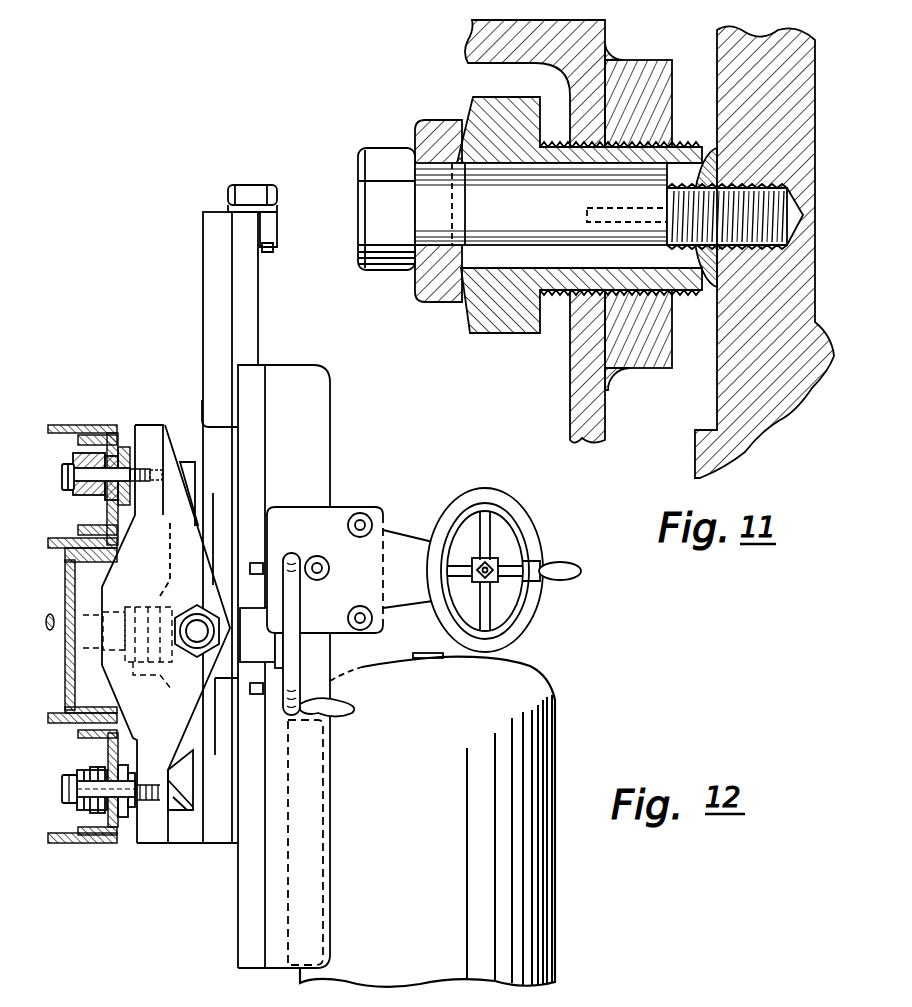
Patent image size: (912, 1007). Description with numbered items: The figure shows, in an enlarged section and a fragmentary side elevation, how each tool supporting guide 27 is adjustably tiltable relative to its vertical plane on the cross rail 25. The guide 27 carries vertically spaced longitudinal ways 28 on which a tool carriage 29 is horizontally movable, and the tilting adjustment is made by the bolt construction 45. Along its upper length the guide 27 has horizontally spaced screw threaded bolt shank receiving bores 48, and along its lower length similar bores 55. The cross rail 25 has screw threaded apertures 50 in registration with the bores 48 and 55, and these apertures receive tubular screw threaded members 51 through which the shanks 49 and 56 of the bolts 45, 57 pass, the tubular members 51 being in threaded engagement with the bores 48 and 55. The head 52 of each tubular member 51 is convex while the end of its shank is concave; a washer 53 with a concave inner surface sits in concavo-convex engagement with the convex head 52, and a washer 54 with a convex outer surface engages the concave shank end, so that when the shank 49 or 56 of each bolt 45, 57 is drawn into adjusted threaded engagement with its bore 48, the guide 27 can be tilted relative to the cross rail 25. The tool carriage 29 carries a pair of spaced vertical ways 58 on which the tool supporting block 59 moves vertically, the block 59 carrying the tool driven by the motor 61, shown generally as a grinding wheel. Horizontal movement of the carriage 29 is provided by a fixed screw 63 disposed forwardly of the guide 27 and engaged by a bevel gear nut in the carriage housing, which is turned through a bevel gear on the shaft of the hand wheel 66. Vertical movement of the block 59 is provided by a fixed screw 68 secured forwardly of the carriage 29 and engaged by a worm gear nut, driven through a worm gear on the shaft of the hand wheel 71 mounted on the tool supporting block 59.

In FIG. 11, the cross rail 25 is at (578, 388).
In FIG. 12, the cross rail 25 is at (69, 560).
In FIG. 11, the guide 27 is at (756, 417).
In FIG. 12, the guide 27 is at (124, 585).
In FIG. 12, the longitudinal ways 28 is at (178, 482).
In FIG. 12, the tool carriage 29 is at (218, 310).
In FIG. 11, the bolt construction 45 is at (373, 221).
In FIG. 12, the bolt construction 45 is at (67, 486).
In FIG. 11, the screw threaded bolt shank receiving bore 48 is at (748, 192).
In FIG. 12, the screw threaded bolt shank receiving bore 48 is at (146, 483).
In FIG. 11, the shank 49 is at (509, 221).
In FIG. 11, the screw threaded aperture 50 is at (638, 299).
In FIG. 11, the tubular screw threaded member 51 is at (586, 264).
In FIG. 11, the head 52 is at (495, 318).
In FIG. 12, the head 52 is at (98, 498).
In FIG. 11, the washer 53 is at (432, 130).
In FIG. 12, the washer 53 is at (84, 464).
In FIG. 11, the washer 54 is at (710, 152).
In FIG. 12, the washer 54 is at (134, 469).
In FIG. 12, the bore 55 is at (148, 800).
In FIG. 12, the shank 56 is at (143, 789).
In FIG. 12, the bolt 57 is at (66, 792).
In FIG. 12, the vertical ways 58 is at (262, 318).
In FIG. 12, the tool supporting block 59 is at (283, 438).
In FIG. 12, the motor 61 is at (373, 786).
In FIG. 12, the fixed screw 63 is at (196, 606).
In FIG. 12, the hand wheel 66 is at (352, 708).
In FIG. 12, the fixed screw 68 is at (262, 197).
In FIG. 12, the hand wheel 71 is at (568, 575).